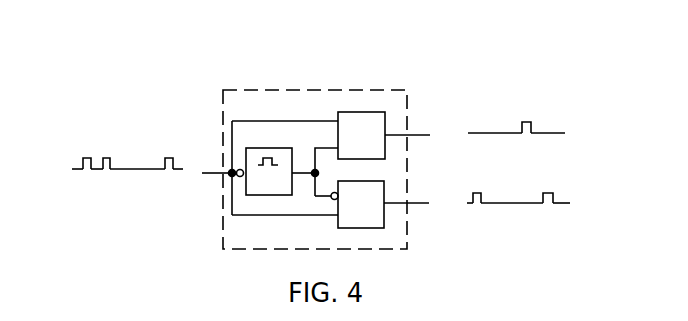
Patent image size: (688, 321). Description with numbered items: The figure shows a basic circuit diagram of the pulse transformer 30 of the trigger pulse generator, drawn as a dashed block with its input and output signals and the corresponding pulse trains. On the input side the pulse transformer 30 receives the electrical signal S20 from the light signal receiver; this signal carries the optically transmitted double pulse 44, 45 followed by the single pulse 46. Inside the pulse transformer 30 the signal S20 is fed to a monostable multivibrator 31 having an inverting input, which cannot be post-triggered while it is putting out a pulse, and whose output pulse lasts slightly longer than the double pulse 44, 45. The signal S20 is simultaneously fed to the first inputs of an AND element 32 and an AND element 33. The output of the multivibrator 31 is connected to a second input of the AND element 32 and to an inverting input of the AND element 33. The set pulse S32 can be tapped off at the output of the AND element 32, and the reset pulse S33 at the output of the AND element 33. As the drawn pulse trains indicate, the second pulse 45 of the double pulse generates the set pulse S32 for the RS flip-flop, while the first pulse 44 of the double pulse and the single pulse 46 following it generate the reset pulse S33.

The pulse transformer 30 is at (408, 123).
The monostable multivibrator 31 is at (274, 148).
The AND element 32 is at (355, 112).
The AND element 33 is at (338, 223).
The first pulse 44 is at (82, 158).
The second pulse 45 is at (107, 157).
The single pulse 46 is at (167, 157).
The electrical signal S20 is at (207, 174).
The set pulse S32 is at (415, 135).
The reset pulse S33 is at (418, 205).